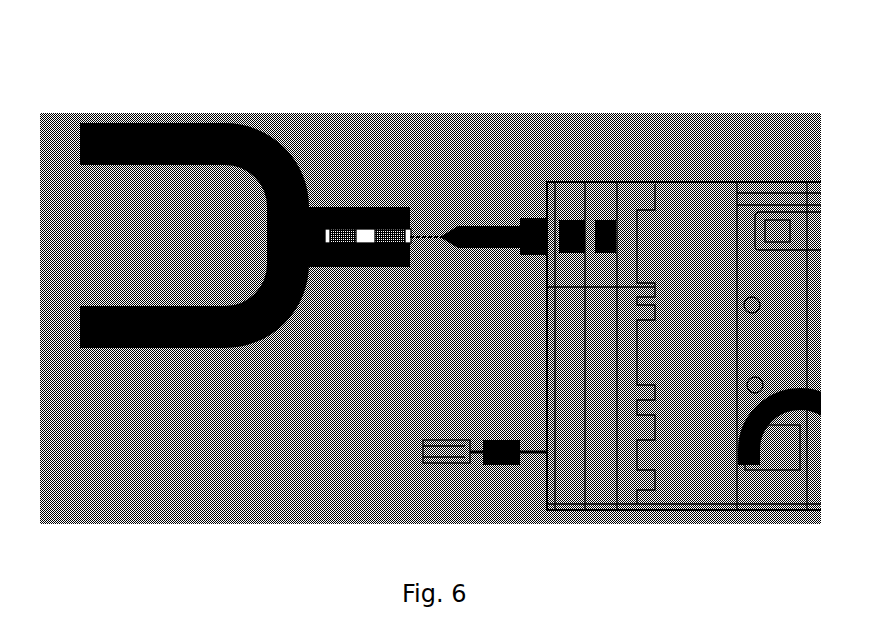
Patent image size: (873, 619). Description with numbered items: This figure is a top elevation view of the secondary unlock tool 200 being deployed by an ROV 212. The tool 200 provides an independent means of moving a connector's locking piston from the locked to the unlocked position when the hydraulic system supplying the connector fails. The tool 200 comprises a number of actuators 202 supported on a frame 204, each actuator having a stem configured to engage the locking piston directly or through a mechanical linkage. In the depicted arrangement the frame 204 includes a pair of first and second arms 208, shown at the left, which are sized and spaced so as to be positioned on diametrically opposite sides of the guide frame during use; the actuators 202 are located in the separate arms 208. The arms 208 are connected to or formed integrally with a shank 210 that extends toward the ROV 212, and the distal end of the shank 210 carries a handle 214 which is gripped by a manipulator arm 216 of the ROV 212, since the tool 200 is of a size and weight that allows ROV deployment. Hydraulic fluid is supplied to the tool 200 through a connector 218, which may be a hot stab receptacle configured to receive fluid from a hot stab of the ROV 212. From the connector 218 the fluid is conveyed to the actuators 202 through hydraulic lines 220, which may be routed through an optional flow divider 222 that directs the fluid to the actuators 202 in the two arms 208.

The secondary unlock tool 200 is at (83, 98).
The actuators 202 is at (143, 162).
The frame 204 is at (290, 340).
The first and second arms 208 is at (215, 126).
The shank 210 is at (353, 268).
The ROV 212 is at (709, 155).
The handle 214 is at (427, 247).
The manipulator arm 216 is at (462, 227).
The connector 218 is at (402, 231).
The hydraulic lines 220 is at (284, 156).
The flow divider 222 is at (339, 232).